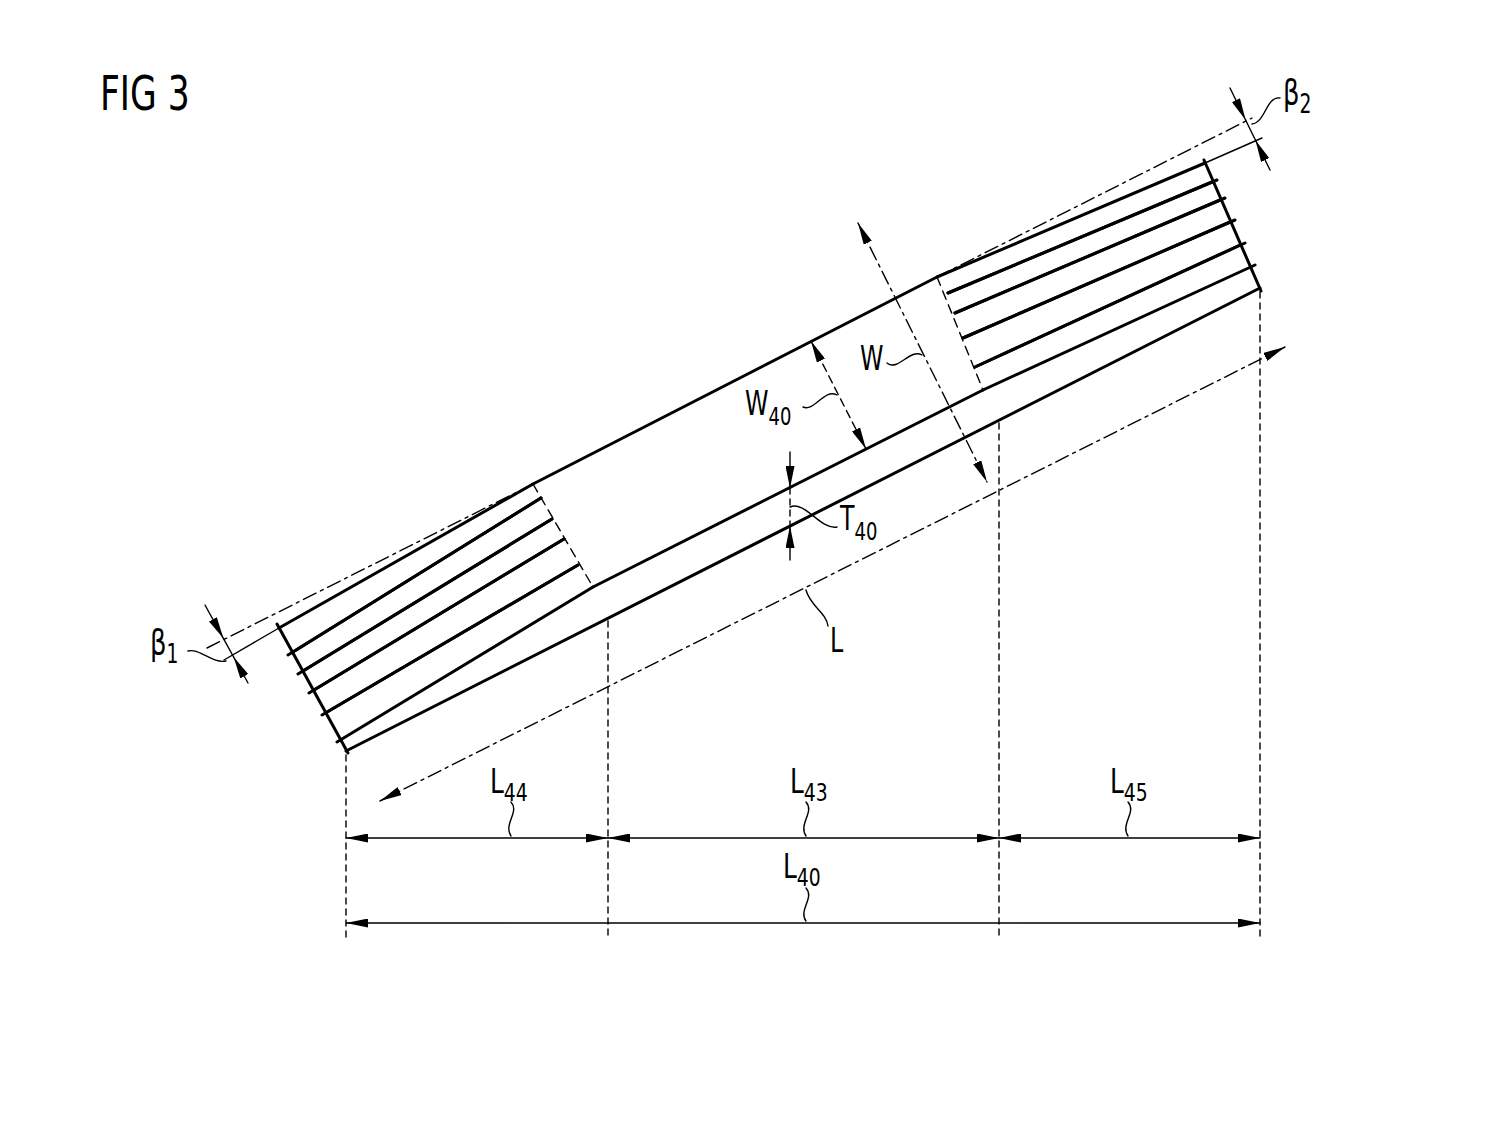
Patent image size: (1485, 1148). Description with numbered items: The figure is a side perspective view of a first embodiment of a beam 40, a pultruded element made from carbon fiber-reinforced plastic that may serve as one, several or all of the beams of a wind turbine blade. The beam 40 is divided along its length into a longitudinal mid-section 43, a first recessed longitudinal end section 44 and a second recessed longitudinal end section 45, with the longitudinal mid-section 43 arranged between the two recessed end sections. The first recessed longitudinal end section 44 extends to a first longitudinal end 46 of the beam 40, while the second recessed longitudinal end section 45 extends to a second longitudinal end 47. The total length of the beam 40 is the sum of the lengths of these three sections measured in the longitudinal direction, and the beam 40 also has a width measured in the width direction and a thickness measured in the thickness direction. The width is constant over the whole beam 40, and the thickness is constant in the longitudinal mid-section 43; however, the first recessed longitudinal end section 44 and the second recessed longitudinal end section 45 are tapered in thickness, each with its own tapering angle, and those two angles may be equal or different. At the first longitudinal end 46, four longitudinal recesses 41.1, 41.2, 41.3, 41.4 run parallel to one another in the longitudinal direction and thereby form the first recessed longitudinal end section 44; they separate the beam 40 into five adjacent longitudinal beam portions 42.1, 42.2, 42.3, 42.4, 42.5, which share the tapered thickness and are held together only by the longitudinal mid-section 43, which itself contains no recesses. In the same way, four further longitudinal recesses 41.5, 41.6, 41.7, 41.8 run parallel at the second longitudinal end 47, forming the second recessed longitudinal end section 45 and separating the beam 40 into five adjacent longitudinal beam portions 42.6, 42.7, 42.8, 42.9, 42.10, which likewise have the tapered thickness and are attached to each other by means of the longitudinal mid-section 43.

The beam 40 is at (630, 434).
The longitudinal recess 41.1 is at (495, 526).
The longitudinal recess 41.2 is at (448, 582).
The longitudinal recess 41.3 is at (401, 637).
The longitudinal recess 41.4 is at (356, 695).
The longitudinal recess 41.5 is at (990, 275).
The longitudinal recess 41.6 is at (1067, 265).
The longitudinal recess 41.7 is at (1132, 265).
The longitudinal recess 41.8 is at (1203, 262).
The longitudinal beam portion 42.1 is at (286, 641).
The longitudinal beam portion 42.2 is at (298, 662).
The longitudinal beam portion 42.3 is at (309, 681).
The longitudinal beam portion 42.4 is at (321, 702).
The longitudinal beam portion 42.5 is at (335, 726).
The longitudinal beam portion 42.6 is at (1210, 172).
The longitudinal beam portion 42.7 is at (1218, 191).
The longitudinal beam portion 42.8 is at (1227, 211).
The longitudinal beam portion 42.9 is at (1237, 233).
The longitudinal beam portion 42.10 is at (1247, 256).
The longitudinal mid-section 43 is at (752, 463).
The first recessed longitudinal end section 44 is at (500, 412).
The second recessed longitudinal end section 45 is at (1186, 86).
The first longitudinal end 46 is at (170, 775).
The second longitudinal end 47 is at (1396, 164).